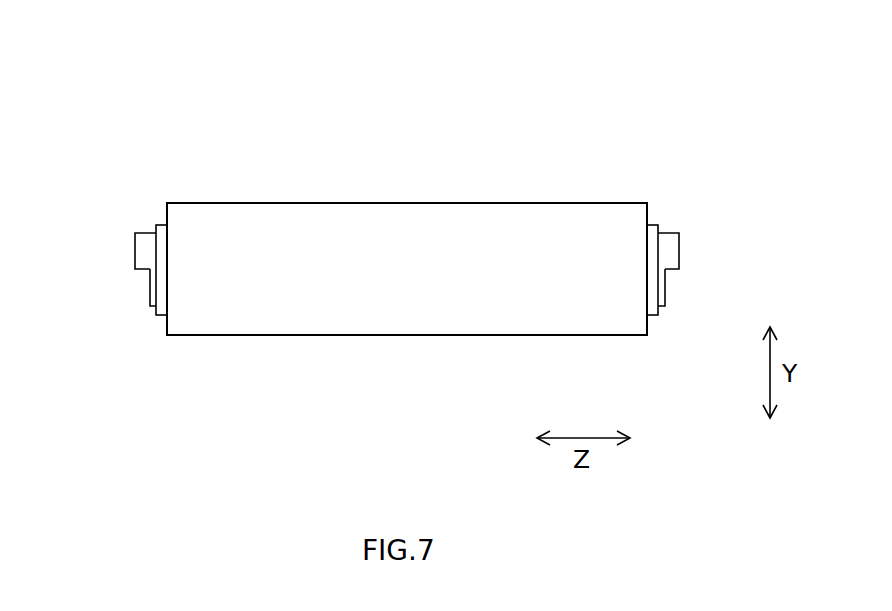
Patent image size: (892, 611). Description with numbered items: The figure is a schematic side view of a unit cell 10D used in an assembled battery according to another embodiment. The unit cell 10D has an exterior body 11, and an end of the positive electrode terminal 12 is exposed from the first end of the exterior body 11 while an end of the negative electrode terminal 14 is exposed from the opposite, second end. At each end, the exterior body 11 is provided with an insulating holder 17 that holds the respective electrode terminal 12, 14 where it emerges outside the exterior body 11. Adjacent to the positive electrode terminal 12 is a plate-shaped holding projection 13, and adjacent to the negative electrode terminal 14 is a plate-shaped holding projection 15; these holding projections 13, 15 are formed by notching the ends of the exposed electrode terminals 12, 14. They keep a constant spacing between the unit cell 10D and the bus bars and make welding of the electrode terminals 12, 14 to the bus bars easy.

The unit cell 10D is at (122, 108).
The exterior body 11 is at (489, 323).
The positive electrode terminal 12 is at (135, 248).
The holding projection 13 is at (150, 292).
The negative electrode terminal 14 is at (679, 248).
The holding projection 15 is at (665, 292).
The insulating holder 17 is at (160, 223).